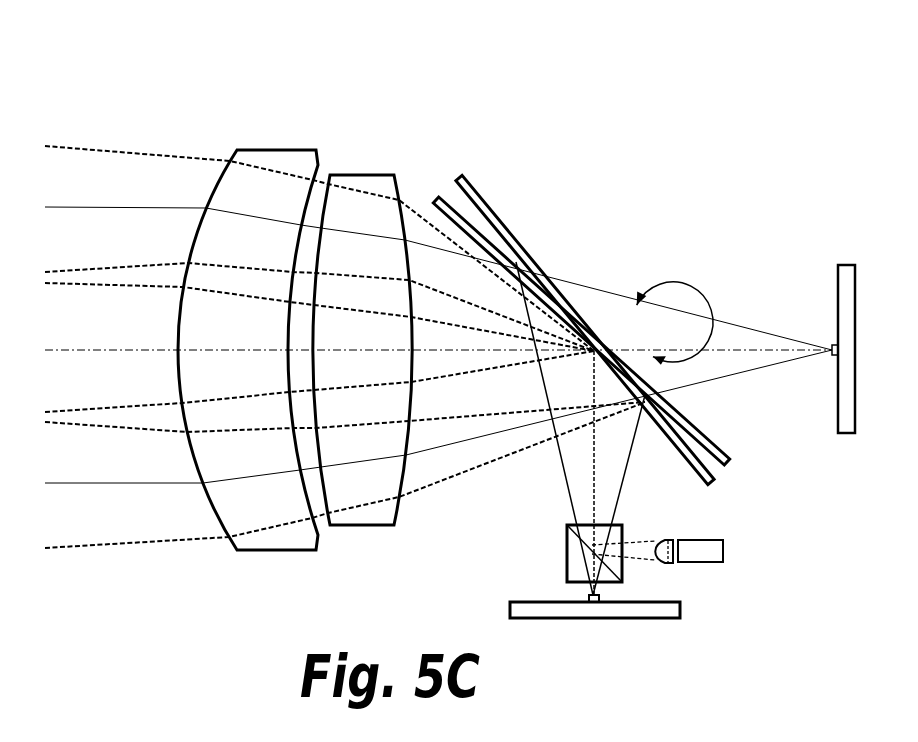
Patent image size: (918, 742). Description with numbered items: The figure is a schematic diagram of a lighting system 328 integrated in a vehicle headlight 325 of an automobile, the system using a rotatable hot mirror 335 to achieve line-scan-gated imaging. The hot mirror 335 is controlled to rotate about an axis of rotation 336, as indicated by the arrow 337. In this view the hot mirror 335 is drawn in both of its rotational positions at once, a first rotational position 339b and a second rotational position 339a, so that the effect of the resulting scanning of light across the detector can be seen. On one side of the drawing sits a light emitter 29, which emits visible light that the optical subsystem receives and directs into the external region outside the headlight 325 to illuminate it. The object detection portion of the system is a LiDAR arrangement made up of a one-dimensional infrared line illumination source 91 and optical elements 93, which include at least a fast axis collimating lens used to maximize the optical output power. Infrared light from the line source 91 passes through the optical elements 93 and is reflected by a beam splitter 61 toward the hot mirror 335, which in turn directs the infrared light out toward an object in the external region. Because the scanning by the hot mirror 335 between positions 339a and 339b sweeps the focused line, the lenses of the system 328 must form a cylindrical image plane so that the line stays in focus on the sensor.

The vehicle headlight 325 is at (337, 58).
The lighting system 328 is at (623, 280).
The rotatable hot mirror 335 is at (623, 320).
The axis of rotation 336 is at (598, 345).
The arrow 337 is at (708, 303).
The light emitter 29 is at (846, 263).
The second rotational position 339a is at (732, 455).
The first rotational position 339b is at (718, 478).
The beam splitter 61 is at (567, 550).
The optical elements 93 is at (658, 540).
The line source of infrared light 91 is at (707, 563).